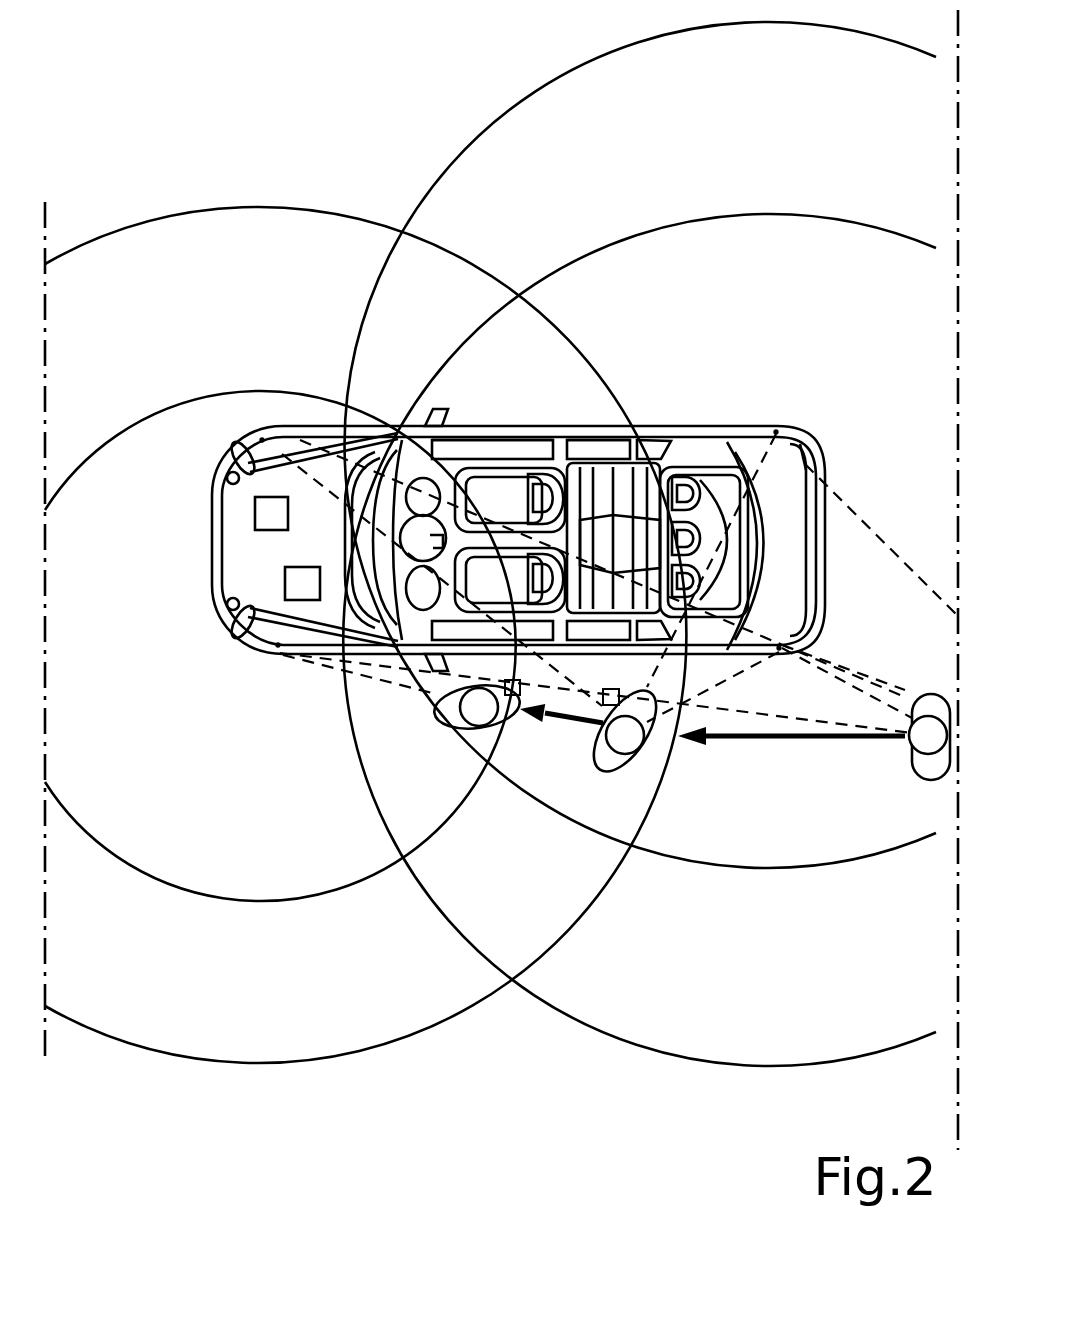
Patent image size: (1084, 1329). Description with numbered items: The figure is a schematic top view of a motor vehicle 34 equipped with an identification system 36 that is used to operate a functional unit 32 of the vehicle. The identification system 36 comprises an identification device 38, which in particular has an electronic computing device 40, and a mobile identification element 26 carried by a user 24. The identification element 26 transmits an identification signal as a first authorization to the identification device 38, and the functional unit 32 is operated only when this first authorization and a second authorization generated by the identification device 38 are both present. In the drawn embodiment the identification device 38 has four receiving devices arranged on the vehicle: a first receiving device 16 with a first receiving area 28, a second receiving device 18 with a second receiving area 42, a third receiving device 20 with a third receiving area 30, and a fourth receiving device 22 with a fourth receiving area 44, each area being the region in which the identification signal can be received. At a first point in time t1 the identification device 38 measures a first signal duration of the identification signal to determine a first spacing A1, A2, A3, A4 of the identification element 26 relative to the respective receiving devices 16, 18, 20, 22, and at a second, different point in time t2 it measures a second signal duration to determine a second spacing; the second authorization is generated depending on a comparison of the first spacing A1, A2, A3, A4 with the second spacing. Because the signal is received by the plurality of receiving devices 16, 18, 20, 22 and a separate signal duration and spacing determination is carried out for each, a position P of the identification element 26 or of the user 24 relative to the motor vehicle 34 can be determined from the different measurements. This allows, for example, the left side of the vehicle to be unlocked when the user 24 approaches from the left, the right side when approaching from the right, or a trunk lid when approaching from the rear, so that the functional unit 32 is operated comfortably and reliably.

The first receiving device 16 is at (278, 646).
The second receiving device 18 is at (261, 440).
The third receiving device 20 is at (776, 432).
The fourth receiving device 22 is at (785, 650).
The user 24 is at (443, 729).
The mobile identification element 26 is at (517, 698).
The first receiving area 28 is at (168, 975).
The third receiving area 30 is at (756, 168).
The functional unit 32 is at (303, 602).
The motor vehicle 34 is at (826, 462).
The identification system 36 is at (474, 413).
The identification device 38 is at (644, 414).
The electronic computing device 40 is at (255, 505).
The second receiving area 42 is at (133, 345).
The fourth receiving area 44 is at (705, 975).
The first spacing A1 is at (774, 710).
The first spacing A2 is at (393, 440).
The first spacing A3 is at (887, 550).
The first spacing A4 is at (858, 677).
The position P is at (465, 766).
The first point in time t1 is at (900, 796).
The second point in time t2 is at (574, 811).